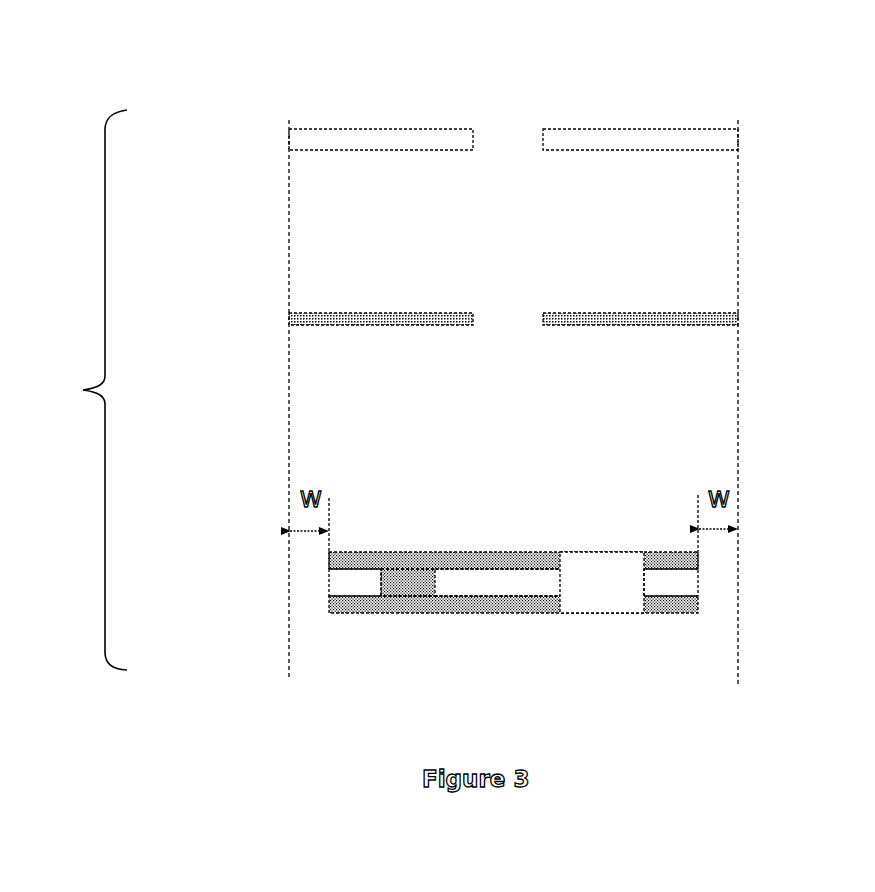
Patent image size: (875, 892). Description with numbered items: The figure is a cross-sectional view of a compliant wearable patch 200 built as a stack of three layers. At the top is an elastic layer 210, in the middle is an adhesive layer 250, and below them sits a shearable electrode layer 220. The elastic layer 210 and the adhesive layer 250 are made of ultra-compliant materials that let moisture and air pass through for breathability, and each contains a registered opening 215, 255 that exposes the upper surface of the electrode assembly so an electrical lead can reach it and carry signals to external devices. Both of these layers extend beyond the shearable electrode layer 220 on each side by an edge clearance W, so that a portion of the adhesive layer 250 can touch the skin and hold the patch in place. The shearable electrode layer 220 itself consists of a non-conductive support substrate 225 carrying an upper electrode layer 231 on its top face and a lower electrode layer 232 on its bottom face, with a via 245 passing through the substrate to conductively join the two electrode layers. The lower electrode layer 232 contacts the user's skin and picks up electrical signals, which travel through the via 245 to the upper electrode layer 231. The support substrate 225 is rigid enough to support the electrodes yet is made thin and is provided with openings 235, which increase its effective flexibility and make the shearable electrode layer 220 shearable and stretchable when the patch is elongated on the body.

The compliant wearable patch 200 is at (79, 390).
The elastic layer 210 is at (360, 138).
The opening 215 is at (513, 138).
The adhesive layer 250 is at (370, 318).
The opening 255 is at (505, 320).
The upper electrode layer 231 is at (488, 560).
The lower electrode layer 232 is at (476, 602).
The via 245 is at (409, 593).
The opening 235 is at (606, 560).
The non-conductive support substrate 225 is at (345, 584).
The shearable electrode layer 220 is at (700, 585).